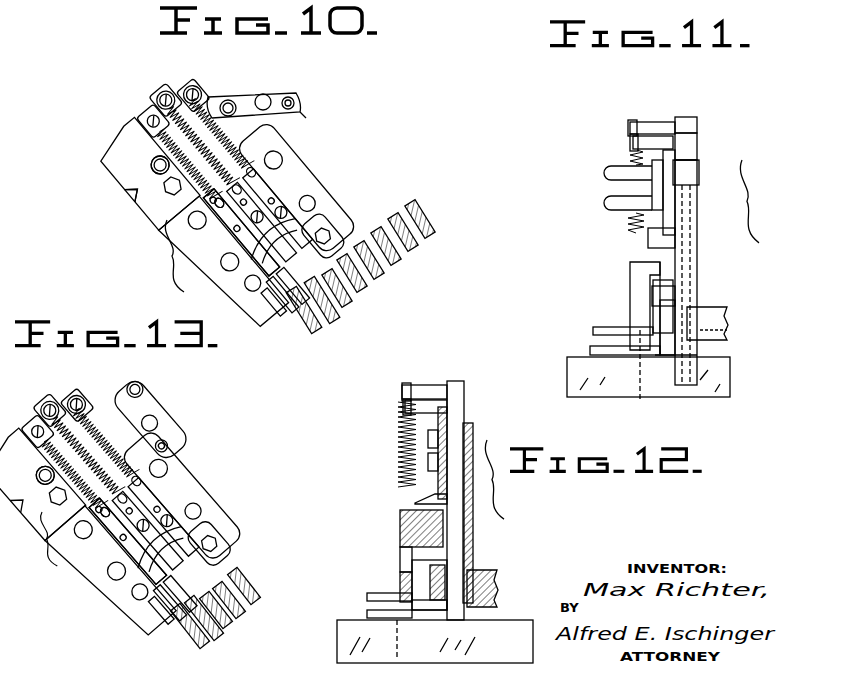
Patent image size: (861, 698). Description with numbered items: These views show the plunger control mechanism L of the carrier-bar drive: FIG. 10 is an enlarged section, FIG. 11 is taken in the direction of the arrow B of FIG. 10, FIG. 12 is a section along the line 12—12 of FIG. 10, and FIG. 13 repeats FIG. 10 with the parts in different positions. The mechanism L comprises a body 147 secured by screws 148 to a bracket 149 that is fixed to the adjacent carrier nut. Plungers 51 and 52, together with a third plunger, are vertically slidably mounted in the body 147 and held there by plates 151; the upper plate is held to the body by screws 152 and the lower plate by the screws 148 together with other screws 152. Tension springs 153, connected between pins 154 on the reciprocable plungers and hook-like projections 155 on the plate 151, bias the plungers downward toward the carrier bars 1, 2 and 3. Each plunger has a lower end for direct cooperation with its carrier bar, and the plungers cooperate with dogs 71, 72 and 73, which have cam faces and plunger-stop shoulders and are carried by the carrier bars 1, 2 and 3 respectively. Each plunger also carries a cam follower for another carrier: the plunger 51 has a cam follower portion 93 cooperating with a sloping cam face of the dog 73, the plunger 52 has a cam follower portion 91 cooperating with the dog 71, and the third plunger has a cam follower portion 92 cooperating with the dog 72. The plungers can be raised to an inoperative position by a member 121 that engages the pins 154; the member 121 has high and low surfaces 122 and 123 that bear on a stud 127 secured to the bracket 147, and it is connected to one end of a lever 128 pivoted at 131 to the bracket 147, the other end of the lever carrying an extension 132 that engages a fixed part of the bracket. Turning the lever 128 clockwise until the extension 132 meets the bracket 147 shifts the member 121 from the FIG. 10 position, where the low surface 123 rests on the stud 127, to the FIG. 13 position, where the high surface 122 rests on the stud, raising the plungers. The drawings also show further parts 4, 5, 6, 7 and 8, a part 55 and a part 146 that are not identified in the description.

In FIG. 10, the carrier bar 1 is at (322, 318).
In FIG. 13, the carrier bar 1 is at (188, 630).
In FIG. 10, the carrier bar 2 is at (336, 302).
In FIG. 12, the carrier bar 2 is at (337, 644).
In FIG. 13, the carrier bar 2 is at (212, 630).
In FIG. 10, the carrier bar 3 is at (348, 298).
In FIG. 11, the carrier bar 3 is at (575, 368).
In FIG. 13, the carrier bar 3 is at (226, 612).
In FIG. 10, the contact lamella 4 is at (362, 280).
In FIG. 13, the contact lamella 4 is at (240, 600).
In FIG. 10, the contact lamella 5 is at (380, 265).
In FIG. 10, the contact lamella 6 is at (398, 242).
In FIG. 10, the contact lamella 7 is at (410, 228).
In FIG. 10, the contact lamella 8 is at (424, 210).
In FIG. 10, the section line 12 is at (158, 78).
In FIG. 10, the arrow B is at (352, 132).
In FIG. 10, the mechanism L is at (163, 256).
In FIG. 11, the mechanism L is at (752, 201).
In FIG. 12, the mechanism L is at (498, 479).
In FIG. 13, the mechanism L is at (40, 539).
In FIG. 10, the plunger 51 is at (152, 120).
In FIG. 12, the plunger 51 is at (465, 610).
In FIG. 13, the plunger 51 is at (33, 418).
In FIG. 10, the plunger 52 is at (162, 97).
In FIG. 11, the plunger 52 is at (697, 122).
In FIG. 12, the plunger 52 is at (460, 392).
In FIG. 13, the plunger 52 is at (53, 405).
In FIG. 10, the block 55 is at (205, 97).
In FIG. 11, the block 55 is at (699, 143).
In FIG. 13, the block 55 is at (72, 396).
In FIG. 10, the dog 71 is at (290, 310).
In FIG. 11, the dog 71 is at (593, 350).
In FIG. 12, the dog 71 is at (367, 613).
In FIG. 13, the dog 71 is at (165, 611).
In FIG. 10, the dog 72 is at (300, 322).
In FIG. 13, the dog 72 is at (175, 621).
In FIG. 10, the dog 73 is at (376, 232).
In FIG. 13, the dog 73 is at (256, 585).
In FIG. 10, the cam follower portion 91 is at (270, 287).
In FIG. 11, the cam follower portion 91 is at (602, 330).
In FIG. 12, the cam follower portion 91 is at (385, 595).
In FIG. 13, the cam follower portion 91 is at (160, 601).
In FIG. 10, the cam follower portion 92 is at (272, 292).
In FIG. 11, the cam follower portion 92 is at (645, 375).
In FIG. 12, the cam follower portion 92 is at (405, 640).
In FIG. 13, the cam follower portion 92 is at (150, 585).
In FIG. 10, the cam follower portion 93 is at (325, 236).
In FIG. 11, the cam follower portion 93 is at (618, 357).
In FIG. 13, the cam follower portion 93 is at (222, 530).
In FIG. 10, the member 121 is at (150, 126).
In FIG. 11, the member 121 is at (665, 152).
In FIG. 12, the member 121 is at (445, 422).
In FIG. 13, the member 121 is at (45, 478).
In FIG. 10, the high surface 122 is at (160, 160).
In FIG. 13, the high surface 122 is at (52, 440).
In FIG. 10, the low surface 123 is at (135, 190).
In FIG. 10, the stud 127 is at (158, 165).
In FIG. 13, the stud 127 is at (55, 500).
In FIG. 10, the lever 128 is at (258, 100).
In FIG. 11, the lever 128 is at (652, 182).
In FIG. 13, the lever 128 is at (142, 390).
In FIG. 10, the pivot 131 is at (290, 100).
In FIG. 11, the pivot 131 is at (607, 170).
In FIG. 13, the pivot 131 is at (158, 408).
In FIG. 10, the extension 132 is at (298, 110).
In FIG. 11, the extension 132 is at (607, 200).
In FIG. 10, the hole 146 is at (255, 283).
In FIG. 13, the hole 146 is at (220, 541).
In FIG. 10, the body 147 is at (292, 160).
In FIG. 11, the body 147 is at (697, 272).
In FIG. 12, the body 147 is at (475, 426).
In FIG. 13, the body 147 is at (185, 470).
In FIG. 11, the screws 148 is at (653, 308).
In FIG. 13, the screws 148 is at (135, 598).
In FIG. 11, the bracket 149 is at (728, 320).
In FIG. 12, the bracket 149 is at (502, 578).
In FIG. 10, the plates 151 is at (262, 128).
In FIG. 11, the plates 151 is at (665, 238).
In FIG. 12, the plates 151 is at (412, 503).
In FIG. 13, the plates 151 is at (165, 425).
In FIG. 10, the screws 152 is at (265, 150).
In FIG. 11, the screws 152 is at (632, 270).
In FIG. 12, the screws 152 is at (405, 522).
In FIG. 13, the screws 152 is at (170, 445).
In FIG. 10, the tension springs 153 is at (238, 103).
In FIG. 11, the tension springs 153 is at (633, 158).
In FIG. 12, the tension springs 153 is at (404, 458).
In FIG. 13, the tension springs 153 is at (91, 459).
In FIG. 10, the pins 154 is at (189, 92).
In FIG. 11, the pins 154 is at (656, 124).
In FIG. 12, the pins 154 is at (428, 388).
In FIG. 13, the pins 154 is at (78, 398).
In FIG. 10, the hook-like projections 155 is at (210, 200).
In FIG. 11, the hook-like projections 155 is at (630, 233).
In FIG. 12, the hook-like projections 155 is at (427, 470).
In FIG. 13, the hook-like projections 155 is at (125, 420).